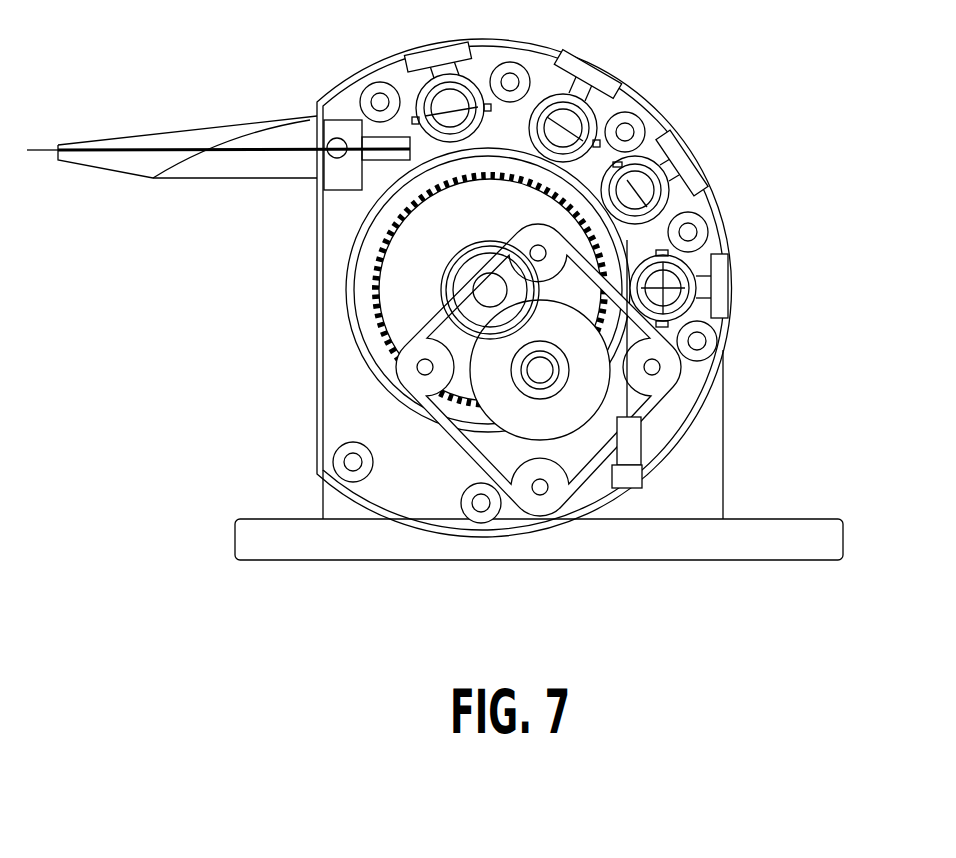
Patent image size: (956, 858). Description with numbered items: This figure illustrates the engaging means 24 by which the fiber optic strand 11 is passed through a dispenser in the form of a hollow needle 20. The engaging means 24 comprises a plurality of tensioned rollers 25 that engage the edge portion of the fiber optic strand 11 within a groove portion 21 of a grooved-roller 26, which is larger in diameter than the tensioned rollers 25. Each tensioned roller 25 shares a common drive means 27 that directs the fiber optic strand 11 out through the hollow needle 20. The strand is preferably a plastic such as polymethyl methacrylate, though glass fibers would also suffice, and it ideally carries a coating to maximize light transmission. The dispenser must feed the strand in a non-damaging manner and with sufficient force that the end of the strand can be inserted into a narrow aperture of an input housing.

The fiber optic strand 11 is at (208, 147).
The hollow needle 20 is at (167, 132).
The groove portion 21 is at (706, 198).
The engaging means 24 is at (641, 48).
The tensioned rollers 25 is at (640, 114).
The grooved-roller 26 is at (668, 241).
The drive means 27 is at (455, 343).